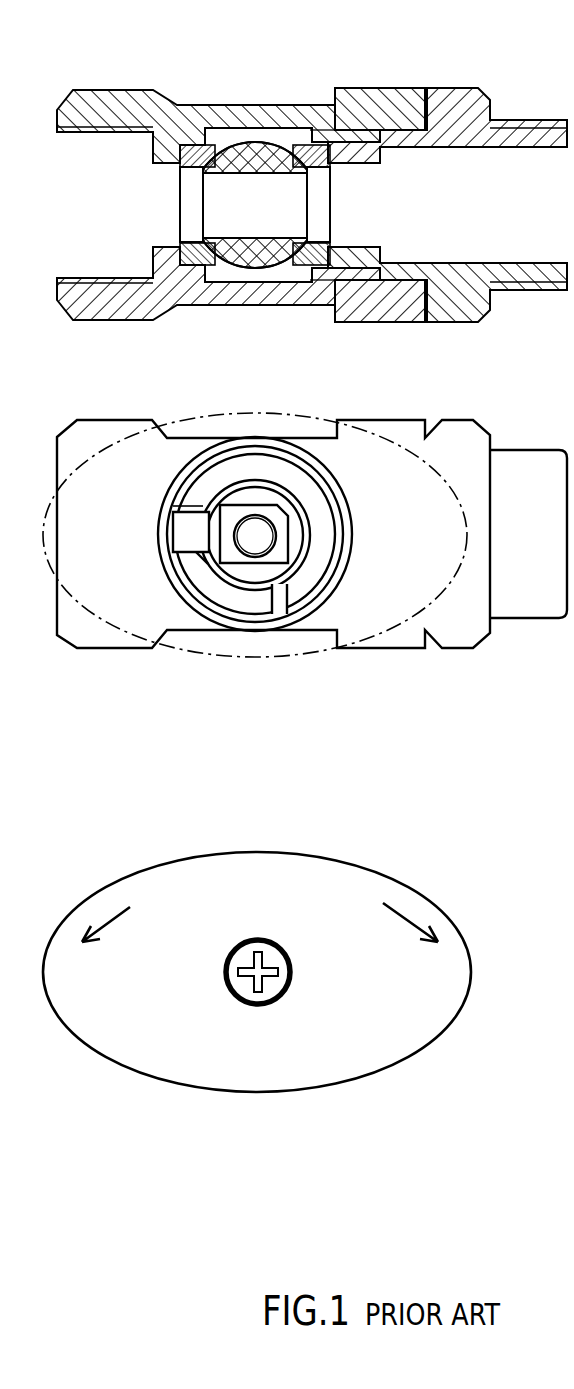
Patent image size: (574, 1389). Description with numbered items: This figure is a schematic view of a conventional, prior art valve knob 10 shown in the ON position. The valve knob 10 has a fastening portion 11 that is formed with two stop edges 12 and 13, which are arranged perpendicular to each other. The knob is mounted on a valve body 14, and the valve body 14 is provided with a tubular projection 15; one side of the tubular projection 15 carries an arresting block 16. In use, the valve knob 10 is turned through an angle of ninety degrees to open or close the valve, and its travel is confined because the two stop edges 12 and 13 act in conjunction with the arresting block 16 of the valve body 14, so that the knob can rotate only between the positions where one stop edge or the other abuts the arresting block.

The valve knob 10 is at (440, 478).
The fastening portion 11 is at (330, 468).
The stop edge 12 is at (183, 507).
The stop edge 13 is at (277, 602).
The valve body 14 is at (373, 88).
The tubular projection 15 is at (250, 482).
The arresting block 16 is at (192, 540).